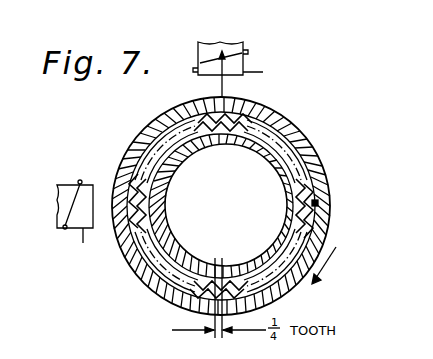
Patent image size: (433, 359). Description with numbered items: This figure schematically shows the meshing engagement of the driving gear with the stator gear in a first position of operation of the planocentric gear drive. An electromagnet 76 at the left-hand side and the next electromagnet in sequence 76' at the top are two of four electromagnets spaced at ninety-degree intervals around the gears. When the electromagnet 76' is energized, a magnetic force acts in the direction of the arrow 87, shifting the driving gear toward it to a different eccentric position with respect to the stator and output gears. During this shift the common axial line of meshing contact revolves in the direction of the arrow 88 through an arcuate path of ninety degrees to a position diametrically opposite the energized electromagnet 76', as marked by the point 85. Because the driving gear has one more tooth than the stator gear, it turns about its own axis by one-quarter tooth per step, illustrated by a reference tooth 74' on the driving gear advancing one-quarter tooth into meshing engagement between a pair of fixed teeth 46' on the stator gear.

The reference tooth 74' is at (226, 207).
The pair of fixed teeth 46' is at (219, 282).
The electromagnet 76' is at (254, 58).
The arrow 87 is at (223, 90).
The electromagnet 76 is at (64, 192).
The point 85 is at (318, 203).
The arrow 88 is at (326, 264).